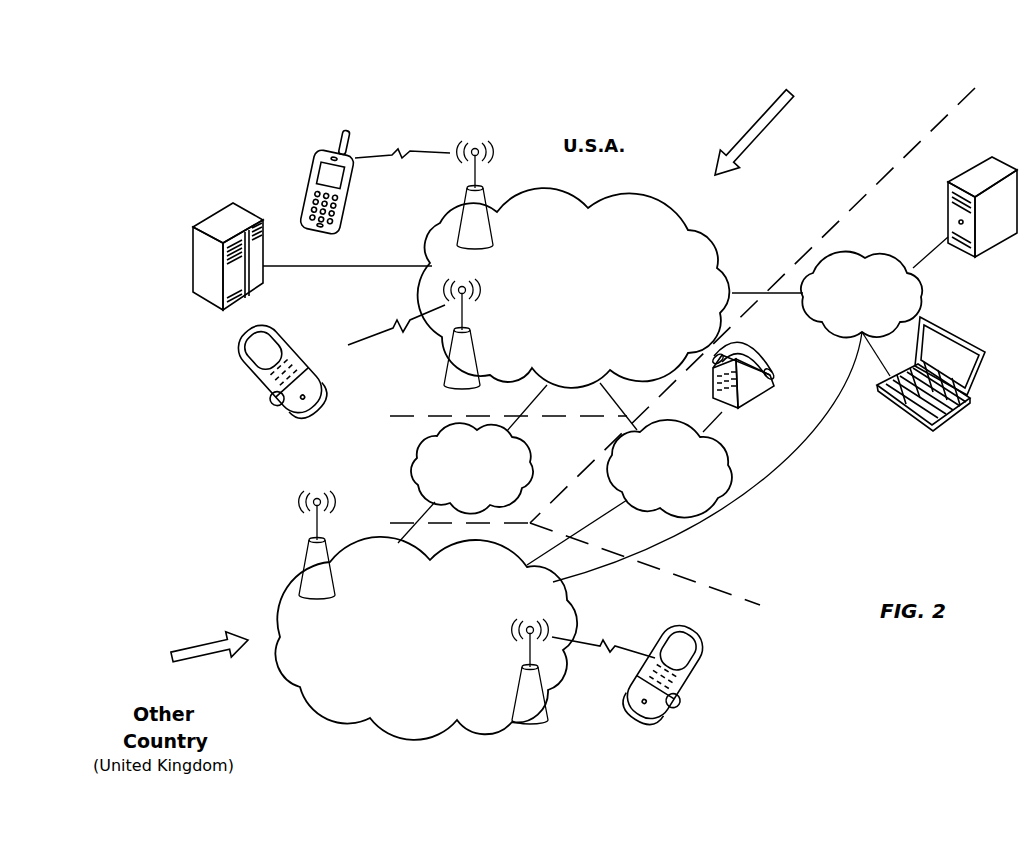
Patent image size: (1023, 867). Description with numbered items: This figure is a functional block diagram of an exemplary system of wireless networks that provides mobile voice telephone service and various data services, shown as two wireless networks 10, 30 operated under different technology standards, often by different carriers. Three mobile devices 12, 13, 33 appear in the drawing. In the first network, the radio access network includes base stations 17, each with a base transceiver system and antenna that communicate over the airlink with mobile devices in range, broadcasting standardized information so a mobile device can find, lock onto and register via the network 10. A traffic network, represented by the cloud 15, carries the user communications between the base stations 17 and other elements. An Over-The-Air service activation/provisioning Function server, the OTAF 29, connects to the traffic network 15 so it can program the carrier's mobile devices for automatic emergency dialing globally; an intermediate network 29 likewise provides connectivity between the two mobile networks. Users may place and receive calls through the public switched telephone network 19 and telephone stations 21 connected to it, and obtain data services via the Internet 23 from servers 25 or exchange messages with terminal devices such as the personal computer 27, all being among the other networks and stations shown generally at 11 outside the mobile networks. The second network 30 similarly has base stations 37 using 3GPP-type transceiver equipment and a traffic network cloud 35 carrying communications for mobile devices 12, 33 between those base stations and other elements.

The wireless network 10 is at (763, 128).
The other networks and stations 11 is at (682, 346).
The mobile device 12 is at (282, 348).
The mobile device 13 is at (300, 170).
The traffic network 15 is at (733, 251).
The base station 17 is at (465, 205).
The public switched telephone network 19 is at (733, 455).
The telephone station 21 is at (760, 385).
The Internet 23 is at (922, 297).
The server 25 is at (945, 222).
The personal computer 27 is at (903, 417).
The OTAF server 29 is at (190, 258).
The wireless network 30 is at (192, 651).
The mobile device 33 is at (712, 653).
The traffic network 35 is at (565, 601).
The base station 37 is at (305, 556).